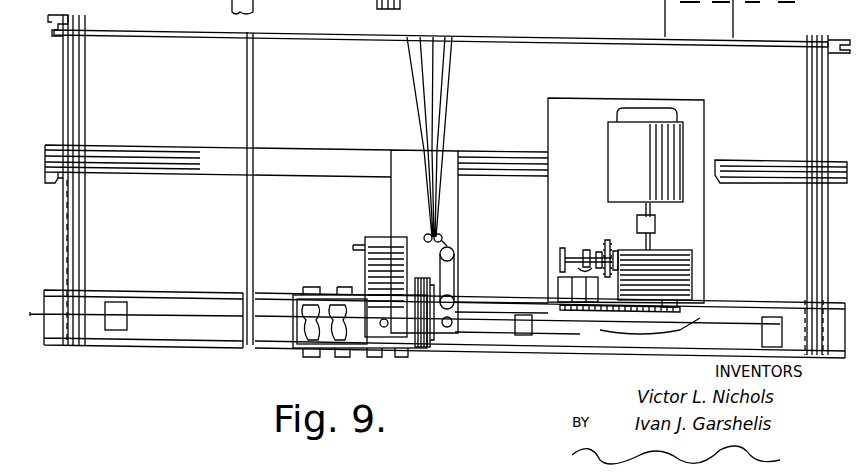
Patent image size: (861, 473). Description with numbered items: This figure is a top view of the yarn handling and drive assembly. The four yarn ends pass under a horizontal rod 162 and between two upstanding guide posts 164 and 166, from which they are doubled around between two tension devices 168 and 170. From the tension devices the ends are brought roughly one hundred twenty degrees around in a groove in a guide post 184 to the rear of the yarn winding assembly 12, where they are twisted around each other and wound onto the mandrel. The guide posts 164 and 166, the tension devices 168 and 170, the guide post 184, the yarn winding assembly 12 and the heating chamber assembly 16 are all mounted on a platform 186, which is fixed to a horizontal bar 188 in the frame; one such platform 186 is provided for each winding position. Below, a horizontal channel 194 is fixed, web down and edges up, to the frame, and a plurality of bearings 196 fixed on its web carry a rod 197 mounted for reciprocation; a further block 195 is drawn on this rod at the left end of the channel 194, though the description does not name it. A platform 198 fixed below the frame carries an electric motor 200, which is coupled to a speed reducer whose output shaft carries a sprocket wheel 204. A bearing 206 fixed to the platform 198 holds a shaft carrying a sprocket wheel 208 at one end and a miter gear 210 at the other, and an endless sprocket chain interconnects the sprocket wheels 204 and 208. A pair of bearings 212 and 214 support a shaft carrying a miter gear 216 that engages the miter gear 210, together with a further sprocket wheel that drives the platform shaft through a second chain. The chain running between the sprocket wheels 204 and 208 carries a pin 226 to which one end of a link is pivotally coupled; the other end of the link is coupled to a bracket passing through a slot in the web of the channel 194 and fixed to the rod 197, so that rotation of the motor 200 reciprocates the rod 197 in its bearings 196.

The yarn winding assembly 12 is at (420, 347).
The heating chamber assembly 16 is at (356, 271).
The horizontal rod 162 is at (498, 38).
The upstanding guide post 164 is at (424, 236).
The upstanding guide post 166 is at (441, 240).
The tension device 168 is at (453, 249).
The tension device 170 is at (454, 298).
The guide post 184 is at (447, 332).
The platform 186 is at (458, 156).
The horizontal bar 188 is at (302, 150).
The horizontal channel 194 is at (172, 345).
The slide block 195 is at (116, 330).
The bearing 196 is at (771, 305).
The rod 197 is at (208, 312).
The platform 198 is at (702, 205).
The electric motor 200 is at (686, 133).
The sprocket wheel 204 is at (690, 307).
The bearing 206 is at (572, 292).
The sprocket wheel 208 is at (578, 313).
The miter gear 210 is at (565, 255).
The bearing 212 is at (557, 252).
The bearing 214 is at (610, 254).
The miter gear 216 is at (586, 255).
The pin 226 is at (647, 316).